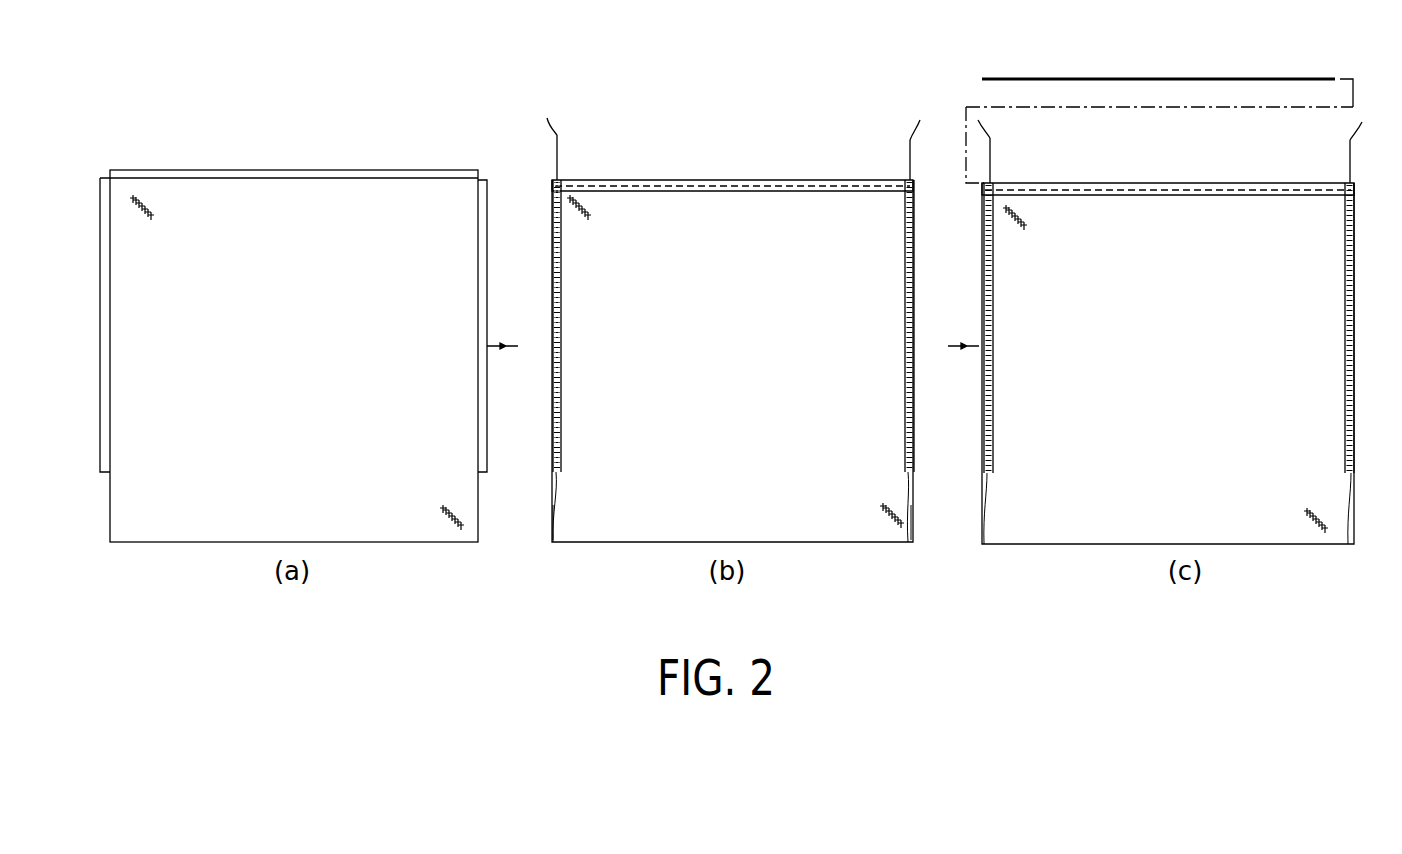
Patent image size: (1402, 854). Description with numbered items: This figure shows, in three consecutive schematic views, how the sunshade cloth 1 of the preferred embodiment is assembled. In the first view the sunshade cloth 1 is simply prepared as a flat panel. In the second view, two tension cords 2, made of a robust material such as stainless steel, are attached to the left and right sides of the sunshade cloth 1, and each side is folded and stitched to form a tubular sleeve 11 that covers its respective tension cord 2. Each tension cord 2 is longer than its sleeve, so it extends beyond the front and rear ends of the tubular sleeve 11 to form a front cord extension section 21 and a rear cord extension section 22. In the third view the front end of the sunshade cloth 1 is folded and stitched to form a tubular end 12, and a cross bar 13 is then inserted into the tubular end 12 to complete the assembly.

The sunshade cloth 1 is at (213, 550).
The tension cord 2 is at (550, 172).
The tubular sleeve 11 is at (562, 273).
The tubular end 12 is at (731, 178).
The cross bar 13 is at (1120, 79).
The front cord extension section 21 is at (565, 150).
The rear cord extension section 22 is at (553, 513).